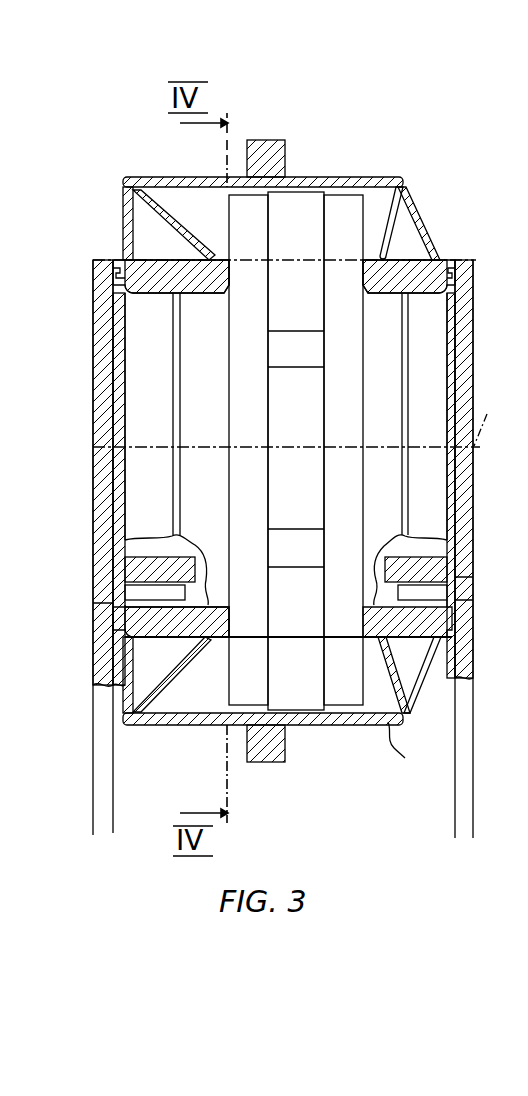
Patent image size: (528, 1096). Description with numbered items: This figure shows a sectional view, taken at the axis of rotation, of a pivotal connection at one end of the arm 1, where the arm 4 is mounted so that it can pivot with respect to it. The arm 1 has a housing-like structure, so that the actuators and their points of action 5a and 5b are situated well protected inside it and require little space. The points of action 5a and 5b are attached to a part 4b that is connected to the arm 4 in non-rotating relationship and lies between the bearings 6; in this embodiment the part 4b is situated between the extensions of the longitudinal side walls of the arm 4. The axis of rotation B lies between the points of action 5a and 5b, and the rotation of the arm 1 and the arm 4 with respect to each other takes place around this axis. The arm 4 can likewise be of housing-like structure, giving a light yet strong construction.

The arm 1 is at (358, 180).
The arm 4 is at (97, 262).
The part 4b is at (342, 203).
The point of action 5a is at (292, 643).
The point of action 5b is at (292, 268).
The bearings 6 is at (222, 258).
The axis of rotation B is at (486, 414).